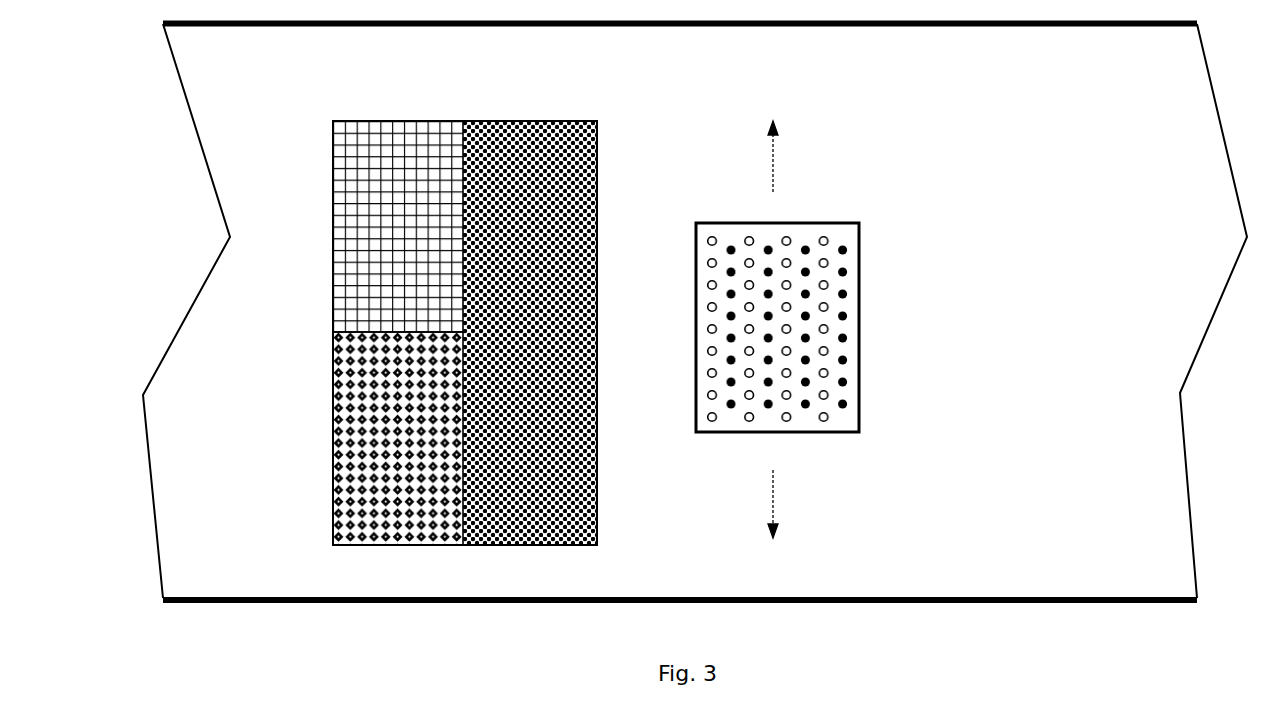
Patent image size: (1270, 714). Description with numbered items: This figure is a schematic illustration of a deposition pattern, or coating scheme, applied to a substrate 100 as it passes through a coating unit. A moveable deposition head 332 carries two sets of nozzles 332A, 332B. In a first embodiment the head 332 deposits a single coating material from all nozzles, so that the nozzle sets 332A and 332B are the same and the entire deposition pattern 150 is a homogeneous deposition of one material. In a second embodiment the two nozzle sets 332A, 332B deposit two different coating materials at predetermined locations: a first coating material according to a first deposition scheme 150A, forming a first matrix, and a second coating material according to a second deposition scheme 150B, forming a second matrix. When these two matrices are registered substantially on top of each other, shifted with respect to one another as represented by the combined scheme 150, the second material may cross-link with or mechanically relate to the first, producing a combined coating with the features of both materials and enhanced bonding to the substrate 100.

The substrate 100 is at (184, 100).
The deposition pattern 150 is at (553, 122).
The first deposition scheme 150A is at (388, 128).
The second deposition scheme 150B is at (340, 485).
The deposition head 332 is at (820, 330).
The first set of nozzles 332A is at (711, 236).
The second set of nozzles 332B is at (839, 247).